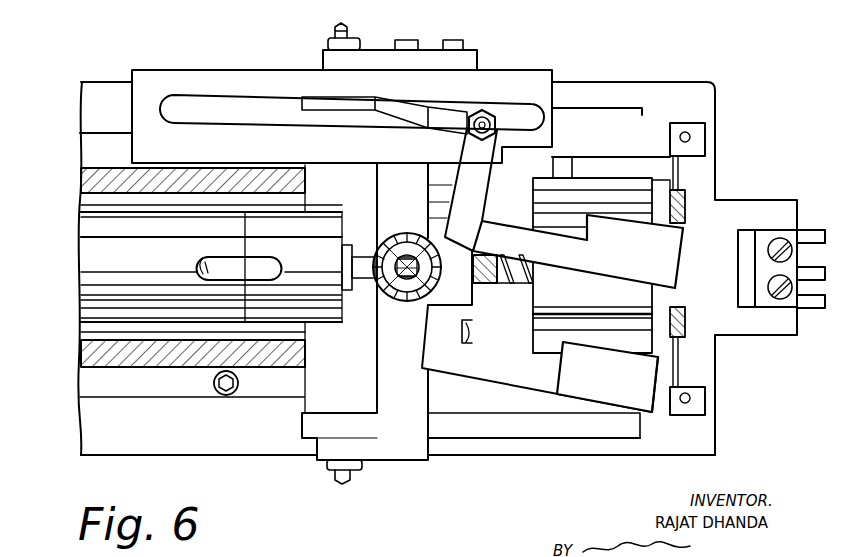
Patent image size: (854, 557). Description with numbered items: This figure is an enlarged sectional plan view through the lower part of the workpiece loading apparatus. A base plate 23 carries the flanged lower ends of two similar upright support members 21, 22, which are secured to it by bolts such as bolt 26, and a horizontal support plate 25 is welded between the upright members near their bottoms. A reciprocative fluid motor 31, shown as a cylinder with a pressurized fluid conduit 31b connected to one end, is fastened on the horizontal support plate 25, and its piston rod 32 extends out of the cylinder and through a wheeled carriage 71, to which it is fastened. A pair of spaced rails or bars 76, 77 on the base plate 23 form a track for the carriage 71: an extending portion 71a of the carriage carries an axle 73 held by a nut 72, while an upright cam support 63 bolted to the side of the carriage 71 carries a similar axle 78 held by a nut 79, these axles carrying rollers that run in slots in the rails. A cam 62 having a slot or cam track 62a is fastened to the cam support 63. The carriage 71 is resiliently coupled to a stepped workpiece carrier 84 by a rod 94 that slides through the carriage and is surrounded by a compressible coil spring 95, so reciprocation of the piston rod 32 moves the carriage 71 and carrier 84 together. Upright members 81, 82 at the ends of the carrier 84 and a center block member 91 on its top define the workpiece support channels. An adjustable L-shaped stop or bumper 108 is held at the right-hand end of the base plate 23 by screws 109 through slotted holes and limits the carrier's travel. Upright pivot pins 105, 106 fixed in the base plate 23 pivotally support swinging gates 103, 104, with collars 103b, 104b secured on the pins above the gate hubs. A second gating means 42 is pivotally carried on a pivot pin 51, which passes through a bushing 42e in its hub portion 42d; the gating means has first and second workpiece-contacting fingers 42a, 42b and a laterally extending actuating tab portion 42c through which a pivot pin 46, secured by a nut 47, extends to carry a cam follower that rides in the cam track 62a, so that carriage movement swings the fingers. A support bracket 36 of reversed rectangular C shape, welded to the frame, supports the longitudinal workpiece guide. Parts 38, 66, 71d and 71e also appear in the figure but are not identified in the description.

The upright support member 21 is at (80, 354).
The upright support member 22 is at (80, 181).
The base plate 23 is at (660, 90).
The horizontal support plate 25 is at (92, 206).
The bolt 26 is at (226, 395).
The reciprocative motor 31 is at (94, 268).
The pressurized fluid conduit 31b is at (226, 262).
The piston rod 32 is at (347, 252).
The support bracket 36 is at (492, 256).
The guide pins 38 is at (686, 214).
The second gating means 42 is at (426, 347).
The first extending finger 42a is at (604, 272).
The second extending finger 42b is at (656, 404).
The actuating tab portion 42c is at (484, 186).
The hub portion 42d is at (400, 240).
The bushing 42e is at (422, 262).
The pivot pin 46 is at (484, 117).
The nut 47 is at (500, 112).
The pivot pin 51 is at (413, 283).
The cam 62 is at (525, 76).
The cam track 62a is at (245, 105).
The upright cam support 63 is at (470, 60).
The terminal lugs 66 is at (452, 40).
The wheeled carriage 71 is at (404, 408).
The extending portion 71a is at (420, 189).
The bracket recess 71d is at (472, 336).
The recess wall 71e is at (474, 331).
The nut 72 is at (354, 467).
The axle 73 is at (346, 478).
The rail 76 is at (522, 440).
The rail 77 is at (590, 90).
The axle 78 is at (343, 28).
The nut 79 is at (330, 46).
The upright member 81 is at (658, 376).
The upright member 82 is at (594, 158).
The workpiece carrier 84 is at (548, 177).
The center block member 91 is at (558, 296).
The rod 94 is at (504, 284).
The compressible coil spring 95 is at (528, 284).
The swinging gate 103 is at (681, 366).
The collar 103b is at (698, 410).
The swinging gate 104 is at (681, 172).
The collar 104b is at (700, 140).
The pivot pin 105 is at (691, 397).
The pivot pin 106 is at (680, 137).
The stop or bumper 108 is at (775, 232).
The screws 109 is at (786, 282).